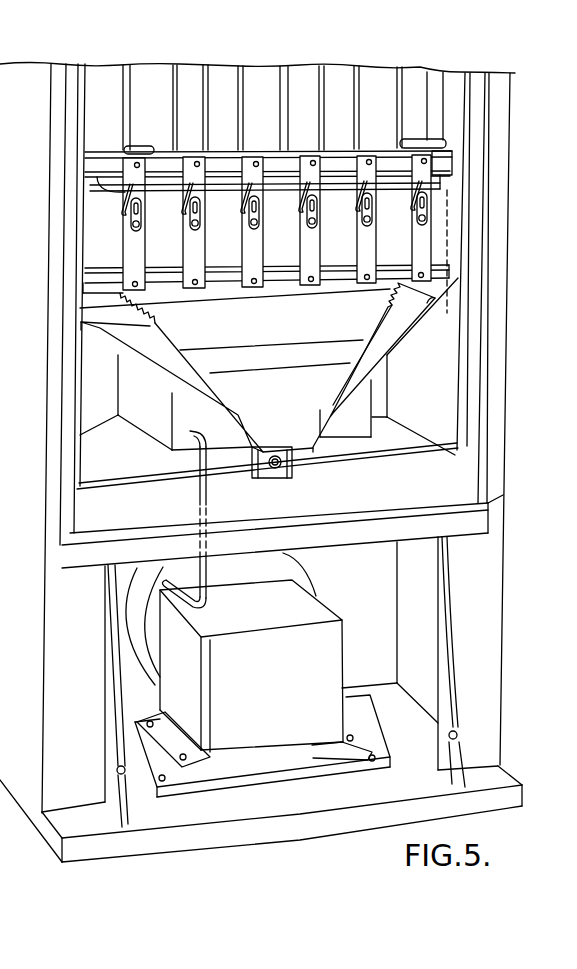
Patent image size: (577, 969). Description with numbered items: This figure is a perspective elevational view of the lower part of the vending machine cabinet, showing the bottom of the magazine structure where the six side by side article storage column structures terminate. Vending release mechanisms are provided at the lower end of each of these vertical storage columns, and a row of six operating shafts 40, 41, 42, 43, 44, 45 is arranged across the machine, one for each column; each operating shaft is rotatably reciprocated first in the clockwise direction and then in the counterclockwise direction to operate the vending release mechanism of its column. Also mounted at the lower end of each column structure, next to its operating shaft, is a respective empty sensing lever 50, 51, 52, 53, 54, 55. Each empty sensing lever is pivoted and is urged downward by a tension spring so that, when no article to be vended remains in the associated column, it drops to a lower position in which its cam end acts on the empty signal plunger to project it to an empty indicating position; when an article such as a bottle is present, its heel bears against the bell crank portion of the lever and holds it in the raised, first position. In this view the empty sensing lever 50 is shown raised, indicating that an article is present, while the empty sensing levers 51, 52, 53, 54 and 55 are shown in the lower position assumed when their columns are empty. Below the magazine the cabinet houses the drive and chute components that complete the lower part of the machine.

The operating shaft 40 is at (135, 232).
The operating shaft 41 is at (193, 232).
The operating shaft 42 is at (253, 231).
The operating shaft 43 is at (311, 228).
The operating shaft 44 is at (367, 222).
The operating shaft 45 is at (422, 222).
The empty sensing lever 50 is at (126, 202).
The empty sensing lever 51 is at (183, 205).
The empty sensing lever 52 is at (243, 205).
The empty sensing lever 53 is at (300, 203).
The empty sensing lever 54 is at (355, 198).
The empty sensing lever 55 is at (411, 198).